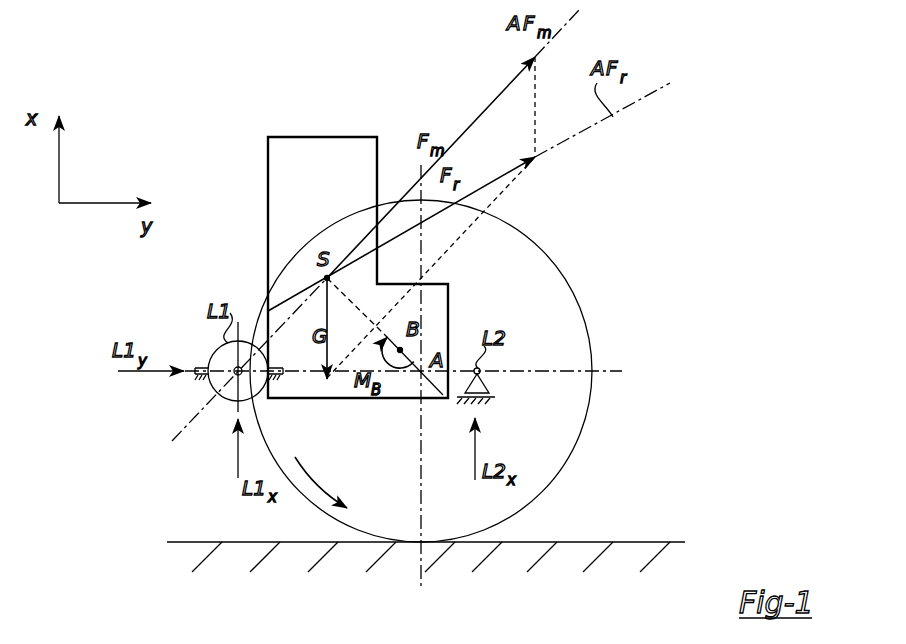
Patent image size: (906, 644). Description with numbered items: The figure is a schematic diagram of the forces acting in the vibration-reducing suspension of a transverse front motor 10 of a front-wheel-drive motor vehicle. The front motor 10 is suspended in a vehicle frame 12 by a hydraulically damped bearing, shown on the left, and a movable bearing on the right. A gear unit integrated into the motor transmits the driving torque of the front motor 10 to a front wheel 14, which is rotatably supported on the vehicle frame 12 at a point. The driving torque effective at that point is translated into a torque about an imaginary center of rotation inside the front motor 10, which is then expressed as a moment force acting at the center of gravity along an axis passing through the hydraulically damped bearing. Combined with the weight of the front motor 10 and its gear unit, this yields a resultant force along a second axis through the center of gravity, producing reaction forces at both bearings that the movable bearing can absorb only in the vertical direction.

The front motor 10 is at (312, 152).
The vehicle frame 12 is at (197, 377).
The front wheel 14 is at (560, 268).